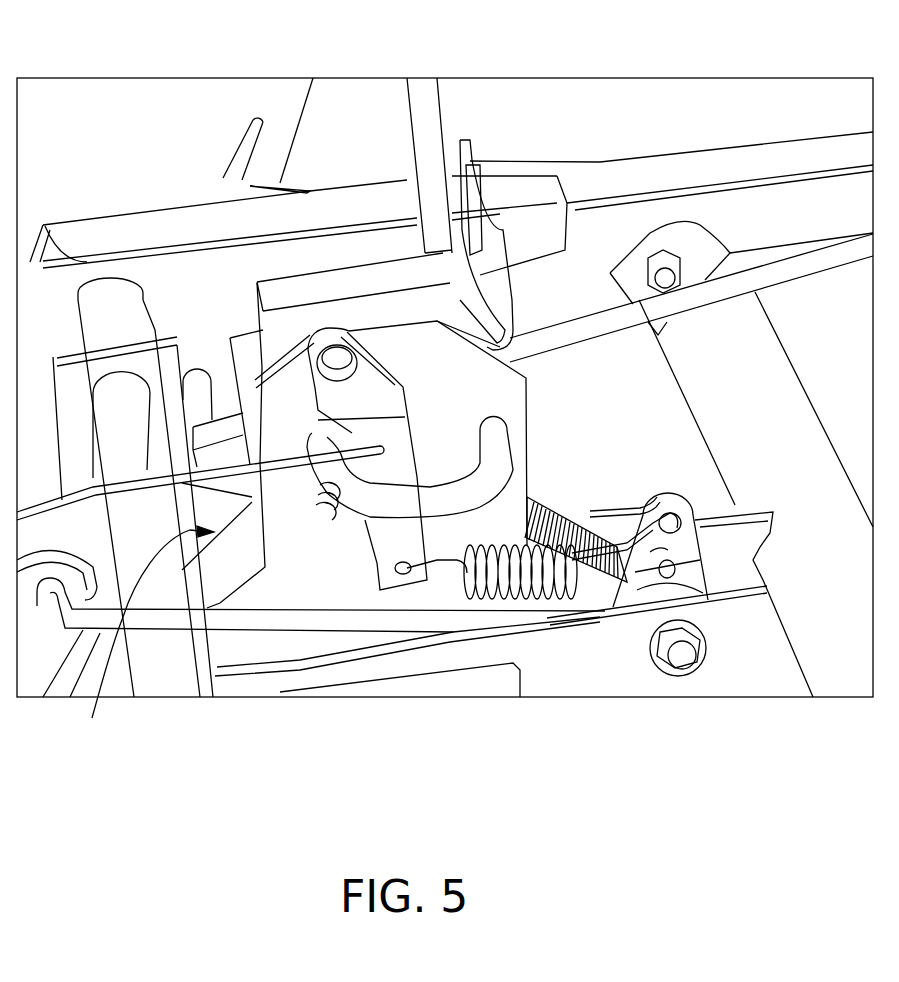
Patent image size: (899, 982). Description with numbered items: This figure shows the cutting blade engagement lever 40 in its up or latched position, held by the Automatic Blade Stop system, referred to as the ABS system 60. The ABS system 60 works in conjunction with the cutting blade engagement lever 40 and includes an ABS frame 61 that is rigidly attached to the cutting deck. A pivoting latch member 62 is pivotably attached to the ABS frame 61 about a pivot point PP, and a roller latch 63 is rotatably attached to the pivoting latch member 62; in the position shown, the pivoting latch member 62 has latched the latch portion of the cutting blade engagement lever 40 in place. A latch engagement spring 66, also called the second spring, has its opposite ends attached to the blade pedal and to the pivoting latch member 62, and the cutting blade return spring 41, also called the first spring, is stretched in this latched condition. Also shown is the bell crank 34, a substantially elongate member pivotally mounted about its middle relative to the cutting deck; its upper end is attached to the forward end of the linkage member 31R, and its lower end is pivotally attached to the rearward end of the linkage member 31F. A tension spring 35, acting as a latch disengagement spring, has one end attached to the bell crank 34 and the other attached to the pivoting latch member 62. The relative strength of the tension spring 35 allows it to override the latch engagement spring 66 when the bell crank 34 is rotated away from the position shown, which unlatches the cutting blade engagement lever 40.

The cutting blade engagement lever 40 is at (430, 118).
The latch engagement spring 66 is at (150, 337).
The pivot point PP is at (337, 372).
The ABS frame 61 is at (520, 397).
The cutting blade return spring 41 is at (555, 505).
The bell crank 34 is at (670, 498).
The linkage member 31R is at (720, 537).
The ABS system 60 is at (321, 662).
The roller latch 63 is at (340, 533).
The pivoting latch member 62 is at (383, 560).
The tension spring 35 is at (533, 590).
The linkage member 31F is at (200, 617).